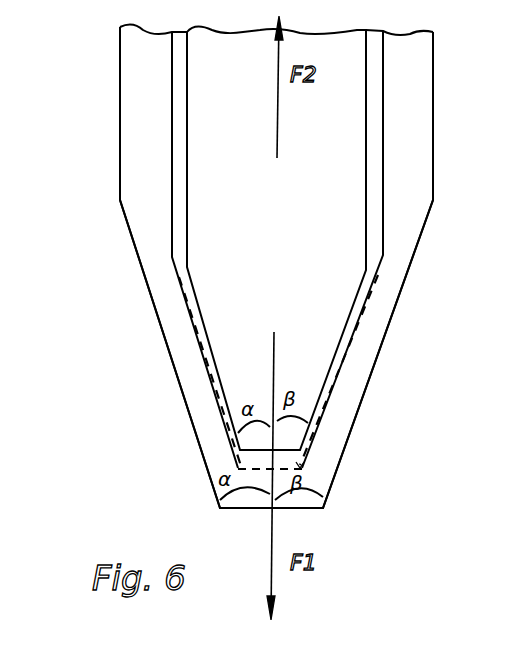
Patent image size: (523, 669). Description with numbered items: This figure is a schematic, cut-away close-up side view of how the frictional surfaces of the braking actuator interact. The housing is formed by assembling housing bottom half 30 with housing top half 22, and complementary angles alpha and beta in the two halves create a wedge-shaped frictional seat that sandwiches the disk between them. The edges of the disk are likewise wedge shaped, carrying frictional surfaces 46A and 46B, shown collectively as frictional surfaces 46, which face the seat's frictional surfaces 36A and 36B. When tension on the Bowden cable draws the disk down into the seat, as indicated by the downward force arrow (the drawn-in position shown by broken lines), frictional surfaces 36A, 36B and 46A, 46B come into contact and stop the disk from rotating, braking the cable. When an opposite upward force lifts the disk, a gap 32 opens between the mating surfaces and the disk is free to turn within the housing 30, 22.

The housing top half 22 is at (415, 72).
The frictional surfaces of the disk 46 is at (220, 137).
The frictional surface 46A is at (198, 322).
The frictional surface 46B is at (358, 312).
The housing bottom half 30 is at (185, 360).
The frictional surface 36A is at (212, 408).
The frictional surface 36B is at (340, 350).
The gap 32 is at (300, 467).